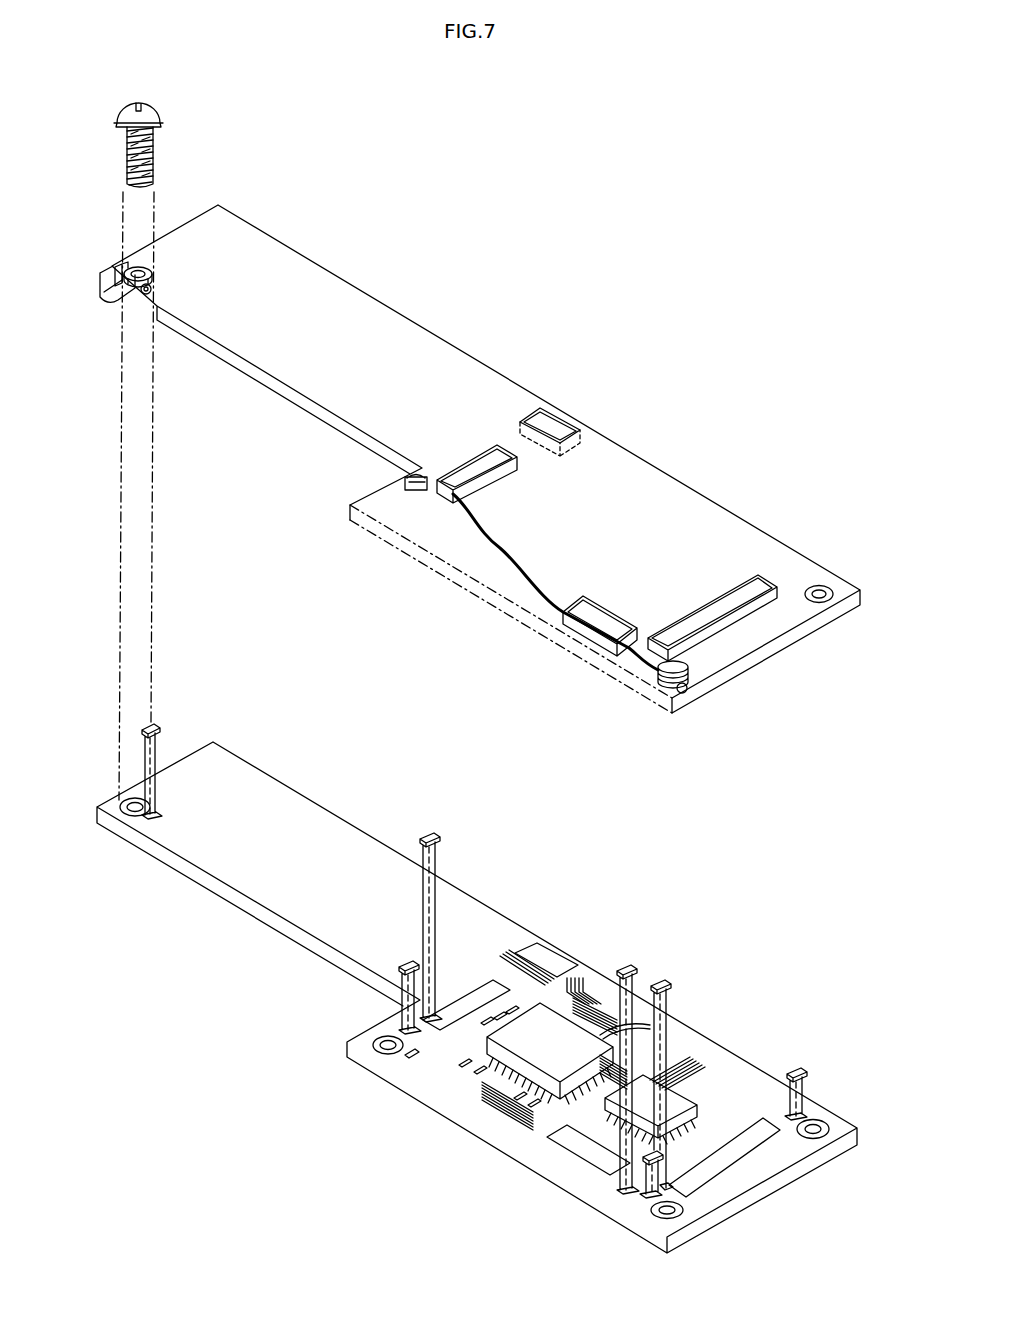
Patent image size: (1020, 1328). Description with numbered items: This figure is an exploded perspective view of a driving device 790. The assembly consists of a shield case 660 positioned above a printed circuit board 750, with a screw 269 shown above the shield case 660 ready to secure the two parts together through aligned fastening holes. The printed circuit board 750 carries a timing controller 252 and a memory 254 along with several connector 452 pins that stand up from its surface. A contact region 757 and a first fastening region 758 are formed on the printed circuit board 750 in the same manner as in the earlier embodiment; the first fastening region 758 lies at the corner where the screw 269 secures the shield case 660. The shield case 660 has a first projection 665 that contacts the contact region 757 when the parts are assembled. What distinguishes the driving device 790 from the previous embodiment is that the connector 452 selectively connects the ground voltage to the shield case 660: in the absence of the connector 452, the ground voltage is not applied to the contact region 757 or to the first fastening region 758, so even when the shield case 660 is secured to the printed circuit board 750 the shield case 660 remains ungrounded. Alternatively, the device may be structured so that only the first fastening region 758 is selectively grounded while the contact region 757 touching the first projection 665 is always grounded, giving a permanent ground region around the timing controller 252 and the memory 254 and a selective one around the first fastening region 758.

The screw 269 is at (156, 105).
The driving device 790 is at (599, 299).
The shield case 660 is at (668, 498).
The first projection 665 is at (407, 490).
The connector 452 is at (140, 727).
The first fastening region 758 is at (120, 806).
The timing controller 252 is at (538, 1040).
The memory 254 is at (678, 1107).
The contact region 757 is at (584, 1150).
The printed circuit board 750 is at (740, 1184).